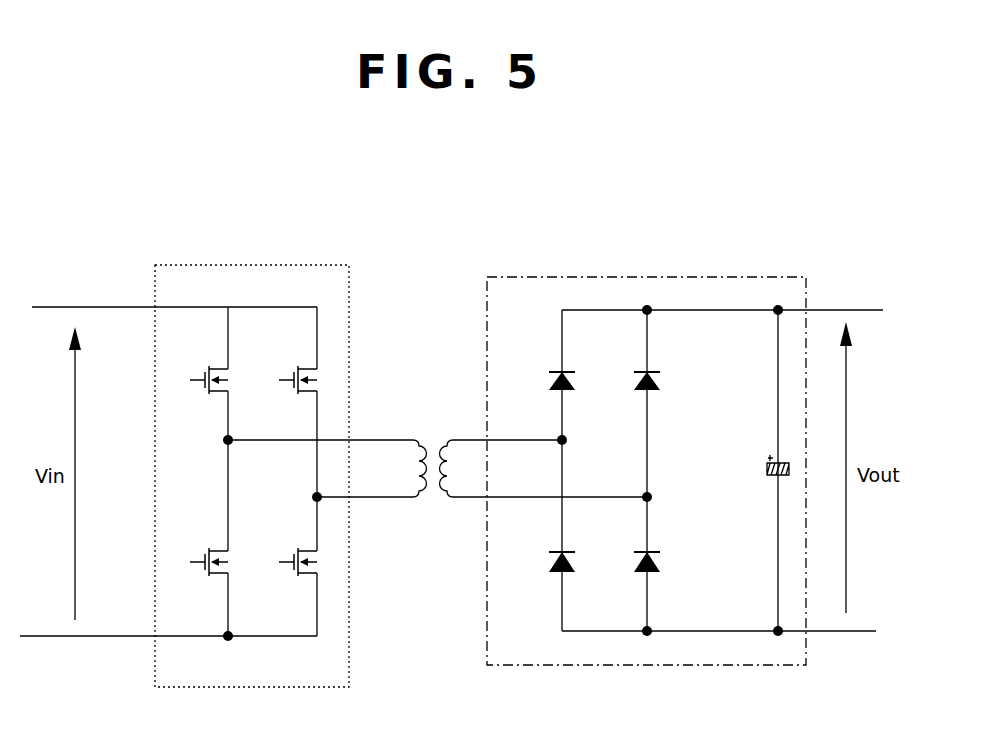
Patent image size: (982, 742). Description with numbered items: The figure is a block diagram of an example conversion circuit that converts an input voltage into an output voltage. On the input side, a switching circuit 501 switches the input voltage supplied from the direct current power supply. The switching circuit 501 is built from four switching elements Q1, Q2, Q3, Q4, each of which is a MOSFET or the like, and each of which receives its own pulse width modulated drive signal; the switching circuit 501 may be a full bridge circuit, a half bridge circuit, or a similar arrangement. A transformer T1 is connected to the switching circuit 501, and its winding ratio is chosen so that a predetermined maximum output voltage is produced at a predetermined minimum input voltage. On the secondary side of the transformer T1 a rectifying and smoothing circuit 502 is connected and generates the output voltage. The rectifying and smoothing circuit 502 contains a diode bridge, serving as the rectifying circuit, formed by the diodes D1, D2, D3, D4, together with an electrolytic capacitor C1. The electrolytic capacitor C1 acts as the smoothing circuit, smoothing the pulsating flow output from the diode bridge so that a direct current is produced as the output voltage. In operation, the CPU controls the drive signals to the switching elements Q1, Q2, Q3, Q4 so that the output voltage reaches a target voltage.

The switching circuit 501 is at (313, 264).
The rectifying and smoothing circuit 502 is at (743, 277).
The switching element Q1 is at (200, 373).
The switching element Q2 is at (200, 538).
The switching element Q3 is at (290, 402).
The switching element Q4 is at (290, 566).
The transformer T1 is at (437, 471).
The diode D1 is at (551, 369).
The diode D2 is at (551, 550).
The diode D3 is at (636, 369).
The diode D4 is at (636, 550).
The electrolytic capacitor C1 is at (763, 470).